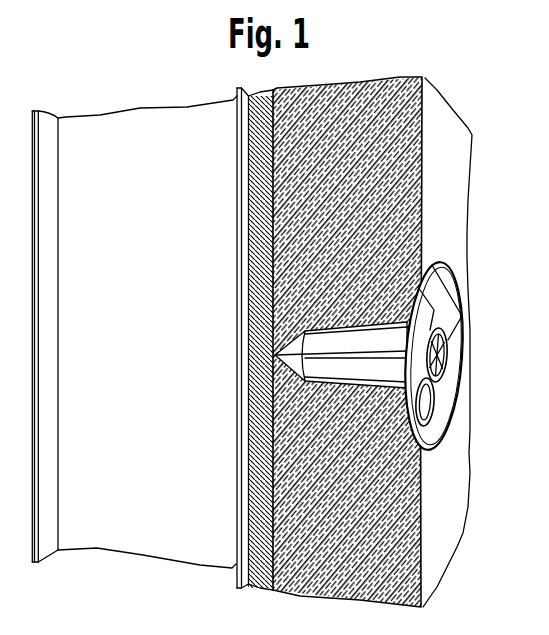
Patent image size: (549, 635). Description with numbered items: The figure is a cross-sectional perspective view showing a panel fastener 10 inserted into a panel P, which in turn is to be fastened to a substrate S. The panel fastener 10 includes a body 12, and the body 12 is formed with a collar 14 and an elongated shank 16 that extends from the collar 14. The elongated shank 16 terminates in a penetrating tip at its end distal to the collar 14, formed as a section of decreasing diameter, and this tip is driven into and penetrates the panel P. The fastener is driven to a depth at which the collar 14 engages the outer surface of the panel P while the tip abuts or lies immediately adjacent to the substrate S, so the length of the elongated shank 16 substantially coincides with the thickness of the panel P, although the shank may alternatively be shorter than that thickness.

The panel fastener 10 is at (464, 292).
The body 12 is at (441, 323).
The collar 14 is at (435, 392).
The elongated shank 16 is at (362, 376).
The substrate S is at (260, 104).
The panel P is at (350, 83).